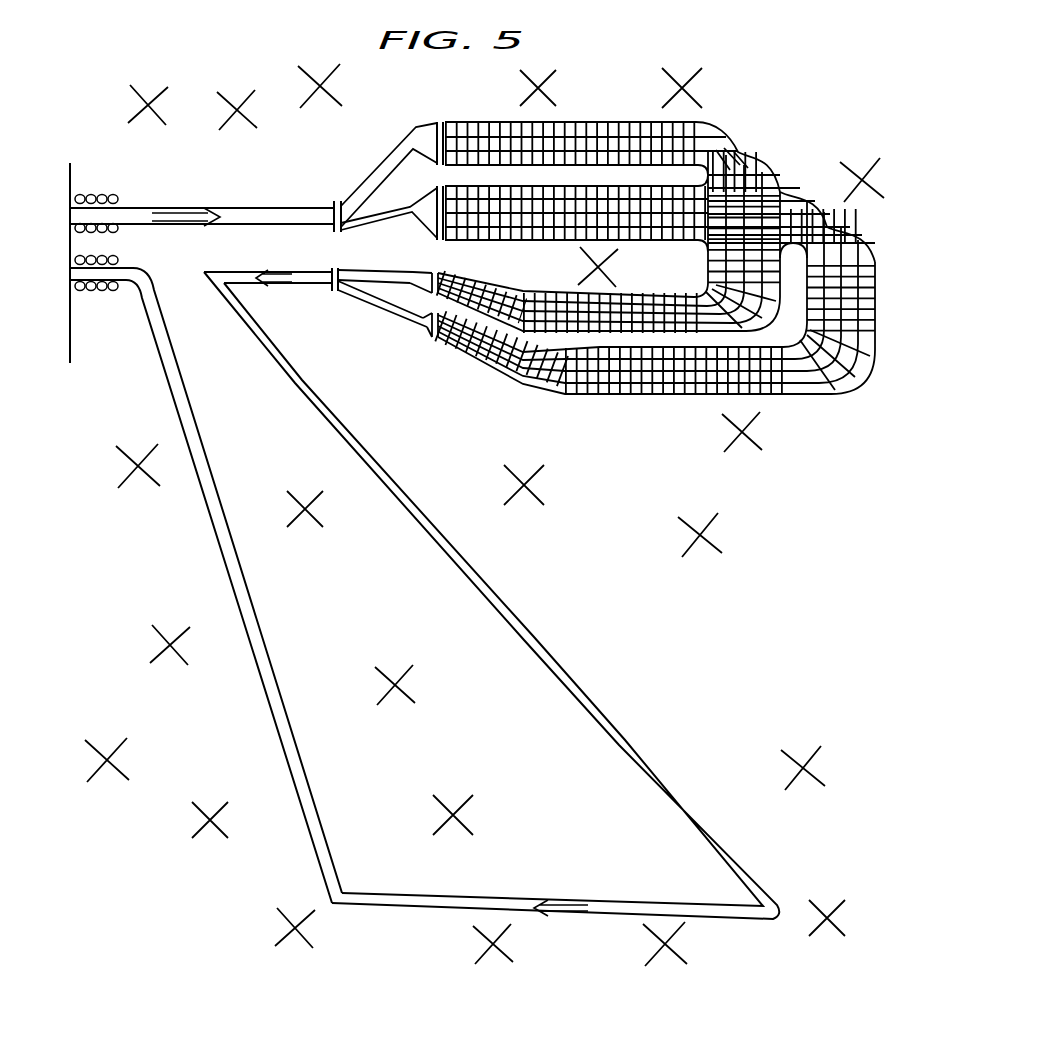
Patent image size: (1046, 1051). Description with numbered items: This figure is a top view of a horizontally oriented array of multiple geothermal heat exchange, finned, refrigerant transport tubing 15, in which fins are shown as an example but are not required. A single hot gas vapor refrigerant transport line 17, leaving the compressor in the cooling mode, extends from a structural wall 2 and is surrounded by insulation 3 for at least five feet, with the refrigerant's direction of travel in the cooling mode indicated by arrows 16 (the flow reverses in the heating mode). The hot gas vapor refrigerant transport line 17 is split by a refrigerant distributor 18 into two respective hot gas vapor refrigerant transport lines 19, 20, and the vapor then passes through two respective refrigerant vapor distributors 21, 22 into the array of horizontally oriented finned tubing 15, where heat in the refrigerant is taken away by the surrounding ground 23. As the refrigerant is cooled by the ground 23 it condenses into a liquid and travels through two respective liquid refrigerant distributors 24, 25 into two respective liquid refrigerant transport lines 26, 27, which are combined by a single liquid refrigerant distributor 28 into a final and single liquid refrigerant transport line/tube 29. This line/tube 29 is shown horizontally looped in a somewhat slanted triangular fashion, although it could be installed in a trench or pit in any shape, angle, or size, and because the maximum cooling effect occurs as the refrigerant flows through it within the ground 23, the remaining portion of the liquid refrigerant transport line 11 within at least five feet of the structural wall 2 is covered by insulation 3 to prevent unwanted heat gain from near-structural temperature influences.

The structural wall 2 is at (70, 247).
The insulation 3 is at (90, 193).
The liquid refrigerant transport line 11 is at (113, 273).
The finned refrigerant transport tubing 15 is at (773, 175).
The arrows 16 is at (182, 213).
The hot gas vapor refrigerant transport line 17 is at (247, 213).
The refrigerant distributor 18 is at (326, 212).
The hot gas vapor refrigerant transport line 19 is at (372, 170).
The hot gas vapor refrigerant transport line 20 is at (372, 217).
The refrigerant vapor distributor 21 is at (428, 130).
The refrigerant vapor distributor 22 is at (423, 203).
The ground 23 is at (724, 529).
The liquid refrigerant distributor 24 is at (422, 273).
The liquid refrigerant distributor 25 is at (423, 337).
The liquid refrigerant transport line 26 is at (403, 277).
The liquid refrigerant transport line 27 is at (377, 302).
The single liquid refrigerant distributor 28 is at (332, 298).
The final and single liquid refrigerant transport line/tube 29 is at (548, 655).